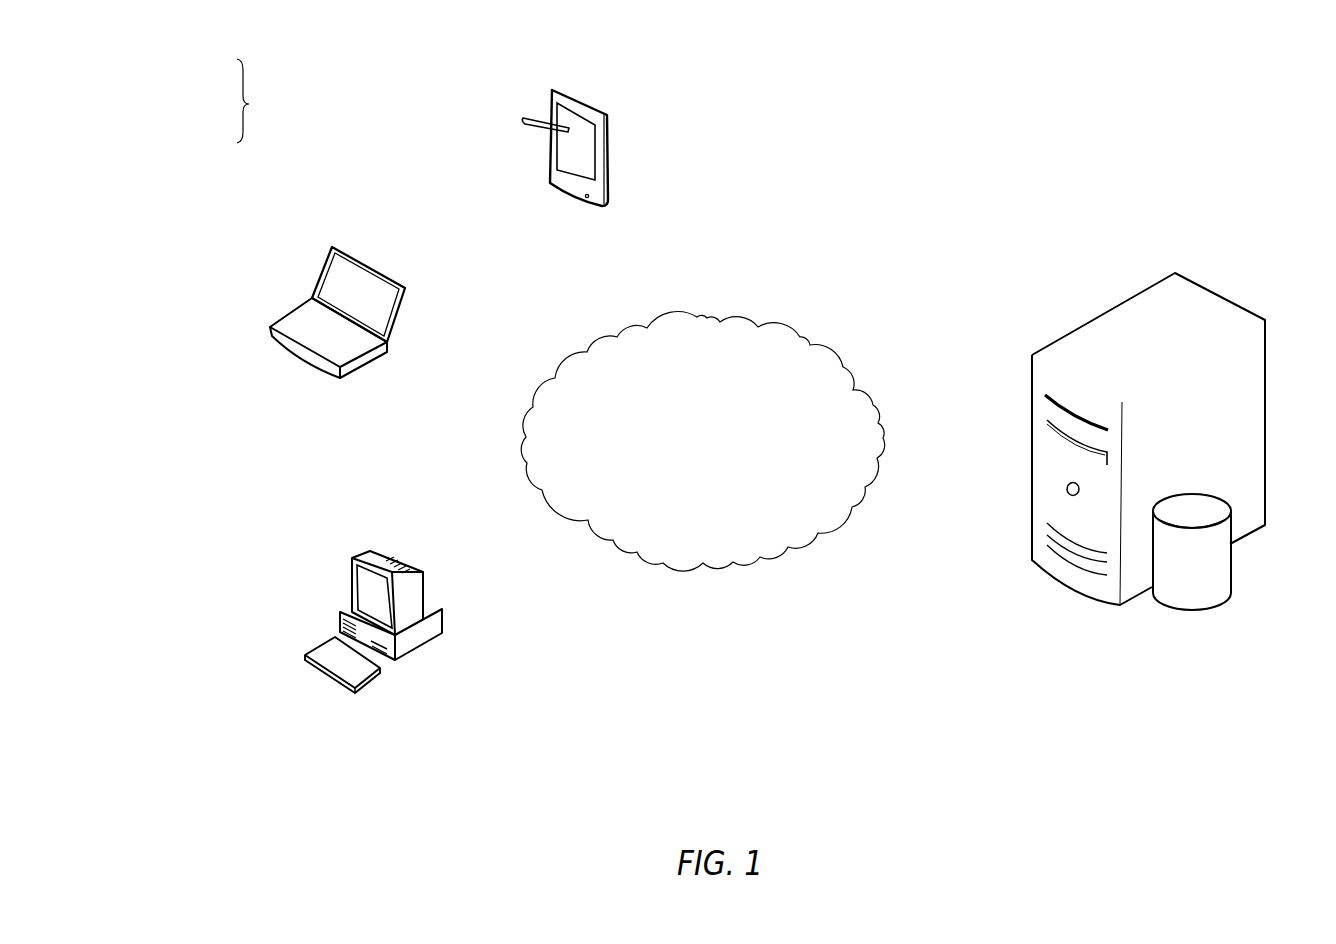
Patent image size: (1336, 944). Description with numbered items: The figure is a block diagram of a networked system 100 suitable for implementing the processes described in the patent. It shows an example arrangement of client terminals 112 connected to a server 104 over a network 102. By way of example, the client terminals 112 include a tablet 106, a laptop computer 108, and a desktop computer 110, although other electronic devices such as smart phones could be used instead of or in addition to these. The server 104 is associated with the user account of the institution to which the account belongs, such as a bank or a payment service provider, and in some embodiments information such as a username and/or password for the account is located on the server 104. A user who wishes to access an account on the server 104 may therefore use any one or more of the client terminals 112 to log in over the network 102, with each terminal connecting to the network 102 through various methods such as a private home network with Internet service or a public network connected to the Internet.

The network environment / system 100 is at (1012, 59).
The network 102 is at (702, 442).
The server 104 is at (1148, 429).
The tablet 106 is at (598, 148).
The laptop computer 108 is at (363, 312).
The desktop computer 110 is at (382, 627).
The client terminals 112 is at (253, 101).